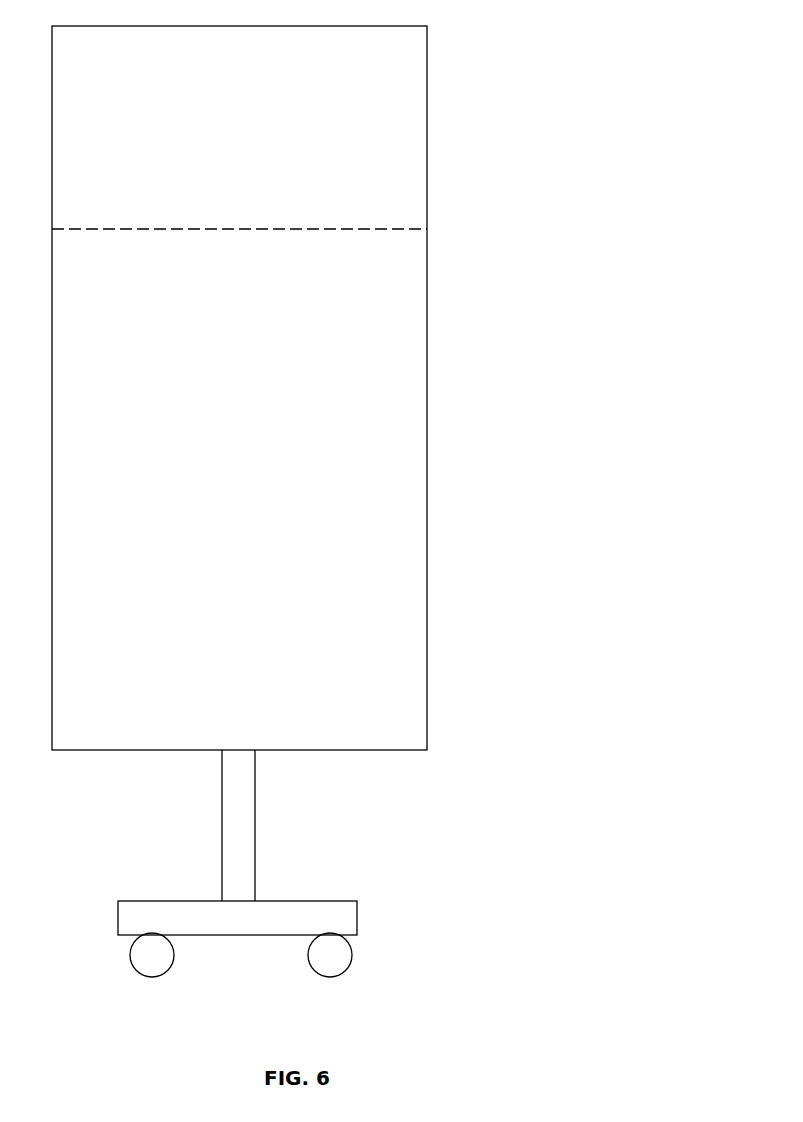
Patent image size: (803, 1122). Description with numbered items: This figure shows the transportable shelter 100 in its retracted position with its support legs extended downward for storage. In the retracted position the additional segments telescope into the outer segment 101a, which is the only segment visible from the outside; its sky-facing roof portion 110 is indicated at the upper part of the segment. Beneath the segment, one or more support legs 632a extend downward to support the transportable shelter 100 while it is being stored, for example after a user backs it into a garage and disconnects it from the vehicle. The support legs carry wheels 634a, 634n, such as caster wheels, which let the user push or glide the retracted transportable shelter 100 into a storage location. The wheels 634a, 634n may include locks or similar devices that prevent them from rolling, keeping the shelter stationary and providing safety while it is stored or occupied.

The transportable shelter 100 is at (666, 236).
The segment 101a is at (239, 388).
The roof portion 110 is at (239, 190).
The support leg 632a is at (280, 850).
The wheel 634a is at (149, 970).
The wheel 634n is at (326, 970).